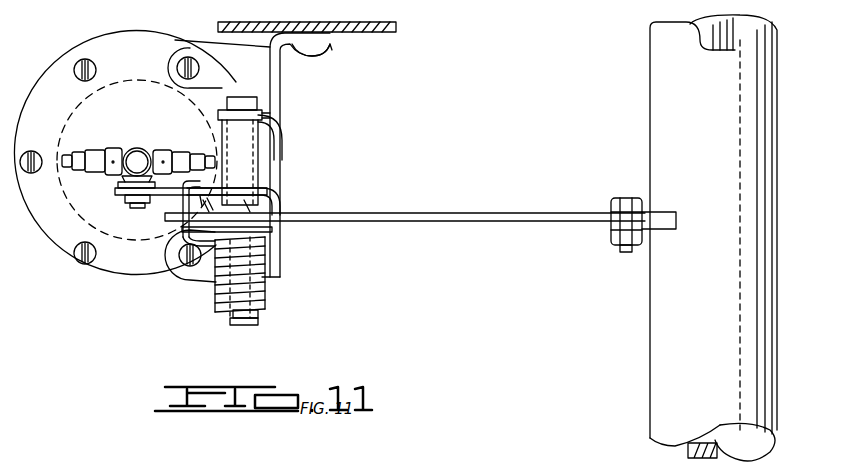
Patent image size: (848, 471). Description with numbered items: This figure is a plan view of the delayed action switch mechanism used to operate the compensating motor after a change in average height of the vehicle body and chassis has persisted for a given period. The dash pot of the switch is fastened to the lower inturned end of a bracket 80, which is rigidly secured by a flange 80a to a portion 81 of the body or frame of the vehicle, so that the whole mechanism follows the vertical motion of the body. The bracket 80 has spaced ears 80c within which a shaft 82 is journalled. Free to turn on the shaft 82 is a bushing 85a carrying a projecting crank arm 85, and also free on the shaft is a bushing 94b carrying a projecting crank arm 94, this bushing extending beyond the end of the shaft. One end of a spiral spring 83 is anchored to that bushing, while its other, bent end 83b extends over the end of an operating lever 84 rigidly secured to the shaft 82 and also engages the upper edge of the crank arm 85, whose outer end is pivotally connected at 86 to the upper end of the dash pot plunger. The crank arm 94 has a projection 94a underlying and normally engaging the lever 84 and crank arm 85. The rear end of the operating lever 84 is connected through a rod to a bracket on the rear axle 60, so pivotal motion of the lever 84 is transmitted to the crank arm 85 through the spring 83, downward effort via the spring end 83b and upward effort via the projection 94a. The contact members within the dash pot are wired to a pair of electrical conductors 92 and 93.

The rear axle 60 is at (660, 300).
The bracket 80 is at (282, 157).
The flange 80a is at (332, 46).
The spaced ears 80c is at (262, 114).
The portion of the body or frame 81 is at (386, 33).
The shaft 82 is at (248, 74).
The spiral spring 83 is at (214, 286).
The bent end of the spring 83b is at (185, 198).
The operating lever 84 is at (384, 220).
The crank arm 85 is at (264, 190).
The bushing 85a is at (250, 145).
The pivotal connection 86 is at (126, 205).
The electrical conductor 92 is at (184, 152).
The electrical conductor 93 is at (80, 152).
The crank arm 94 is at (172, 258).
The projection 94a is at (198, 205).
The bushing 94b is at (236, 318).